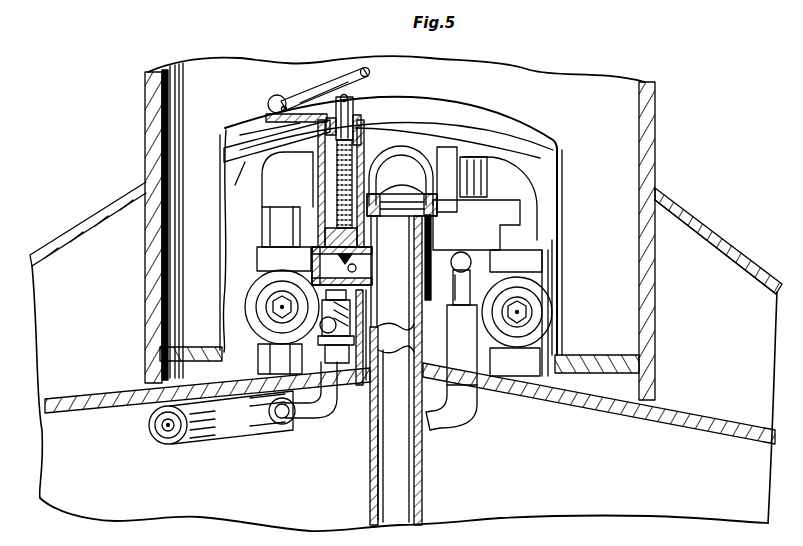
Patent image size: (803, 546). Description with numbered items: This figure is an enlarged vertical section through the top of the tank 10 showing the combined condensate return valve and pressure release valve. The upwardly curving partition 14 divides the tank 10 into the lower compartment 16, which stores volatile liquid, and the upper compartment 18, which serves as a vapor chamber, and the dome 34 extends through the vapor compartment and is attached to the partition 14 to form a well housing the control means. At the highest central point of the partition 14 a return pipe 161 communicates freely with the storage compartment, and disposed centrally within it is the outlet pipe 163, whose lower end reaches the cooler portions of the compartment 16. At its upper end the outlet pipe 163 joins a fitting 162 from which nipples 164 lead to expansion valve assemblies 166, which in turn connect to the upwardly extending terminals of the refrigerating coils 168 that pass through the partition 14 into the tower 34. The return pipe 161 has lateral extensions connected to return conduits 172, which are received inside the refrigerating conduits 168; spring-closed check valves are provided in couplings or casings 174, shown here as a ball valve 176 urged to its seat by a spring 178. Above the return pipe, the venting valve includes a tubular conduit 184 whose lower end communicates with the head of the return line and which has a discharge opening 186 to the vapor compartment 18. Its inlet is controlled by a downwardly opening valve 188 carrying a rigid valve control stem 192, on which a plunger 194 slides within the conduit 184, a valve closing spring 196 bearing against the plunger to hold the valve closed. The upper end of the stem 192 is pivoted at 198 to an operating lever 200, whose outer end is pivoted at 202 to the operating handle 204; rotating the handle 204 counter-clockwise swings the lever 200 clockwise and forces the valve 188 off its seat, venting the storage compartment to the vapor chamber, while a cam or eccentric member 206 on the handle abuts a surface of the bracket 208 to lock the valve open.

The tank 10 is at (713, 228).
The partition 14 is at (686, 412).
The lower compartment 16 is at (484, 520).
The upper compartment 18 is at (733, 270).
The dome 34 is at (649, 130).
The return pipe 161 is at (440, 384).
The fitting 162 is at (440, 148).
The outlet pipe 163 is at (424, 494).
The nipples 164 is at (472, 200).
The expansion valve assemblies 166 is at (262, 258).
The refrigerating coils 168 is at (232, 425).
The return conduits 172 is at (315, 419).
The couplings or casings 174 is at (365, 350).
The ball valve 176 is at (354, 362).
The spring 178 is at (366, 318).
The tubular conduit 184 is at (362, 172).
The discharge opening 186 is at (300, 186).
The downwardly opening valve 188 is at (358, 264).
The valve control stem 192 is at (354, 113).
The plunger 194 is at (334, 162).
The valve closing spring 196 is at (362, 190).
The pivot connection 198 is at (349, 97).
The operating lever 200 is at (310, 96).
The pivot 202 is at (268, 98).
The operating handle or lever 204 is at (365, 68).
The cam or eccentric member 206 is at (265, 110).
The bracket 208 is at (276, 142).